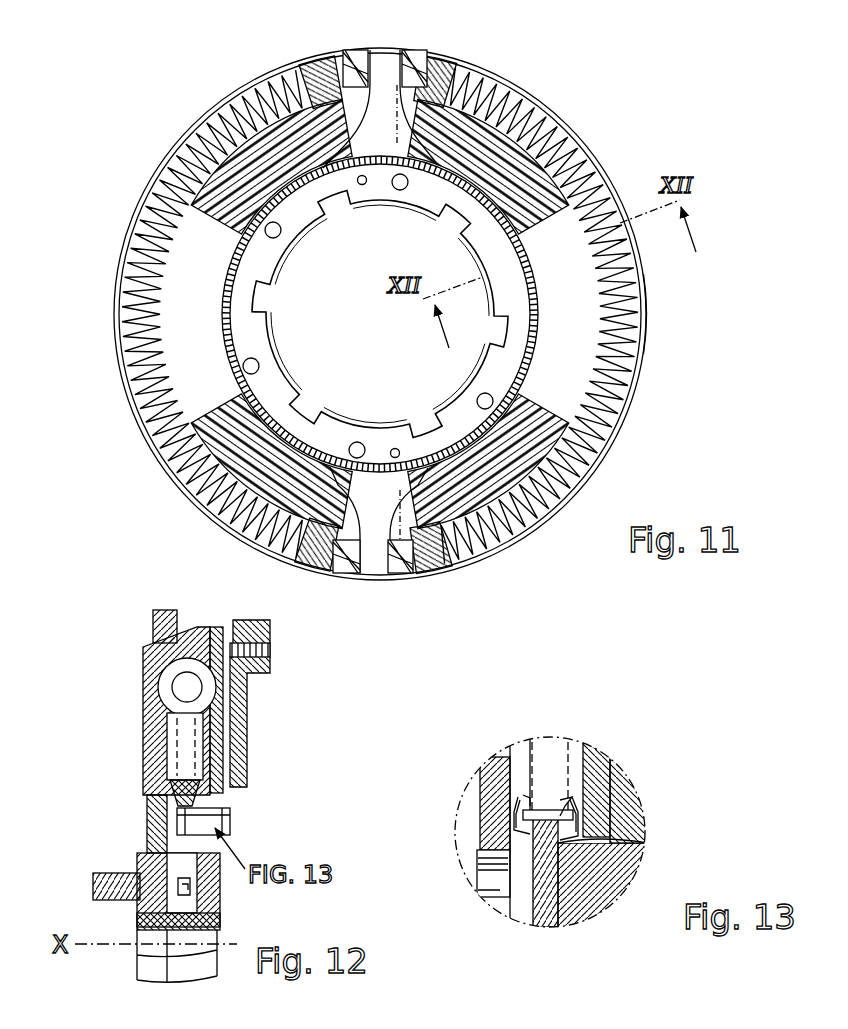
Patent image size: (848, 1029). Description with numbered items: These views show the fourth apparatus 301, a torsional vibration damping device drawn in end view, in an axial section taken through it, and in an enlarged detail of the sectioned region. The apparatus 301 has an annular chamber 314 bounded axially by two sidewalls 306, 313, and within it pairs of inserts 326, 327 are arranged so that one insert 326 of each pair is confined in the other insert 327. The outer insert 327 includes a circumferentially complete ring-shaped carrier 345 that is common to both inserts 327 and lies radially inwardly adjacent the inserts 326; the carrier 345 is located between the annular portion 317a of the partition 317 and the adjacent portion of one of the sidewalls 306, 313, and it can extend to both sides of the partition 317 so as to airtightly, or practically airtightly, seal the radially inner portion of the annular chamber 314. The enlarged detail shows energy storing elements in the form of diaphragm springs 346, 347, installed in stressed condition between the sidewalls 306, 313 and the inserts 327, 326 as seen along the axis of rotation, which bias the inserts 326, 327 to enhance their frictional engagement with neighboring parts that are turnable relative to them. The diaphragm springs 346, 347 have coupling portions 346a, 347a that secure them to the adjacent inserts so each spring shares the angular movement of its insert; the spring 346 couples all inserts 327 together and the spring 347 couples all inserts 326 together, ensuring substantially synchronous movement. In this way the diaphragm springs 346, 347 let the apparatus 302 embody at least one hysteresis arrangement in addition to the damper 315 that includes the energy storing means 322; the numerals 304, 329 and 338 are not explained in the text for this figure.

In FIG. 11, the apparatus 301 is at (505, 44).
In FIG. 12, the apparatus 301 is at (130, 613).
In FIG. 12, the apparatus 302 is at (136, 650).
In FIG. 12, the output part 304 is at (278, 659).
In FIG. 12, the sidewall 306 is at (160, 762).
In FIG. 13, the sidewall 306 is at (493, 764).
In FIG. 12, the sidewall 313 is at (217, 717).
In FIG. 13, the sidewall 313 is at (592, 764).
In FIG. 11, the annular chamber 314 is at (632, 269).
In FIG. 12, the annular chamber 314 is at (184, 700).
In FIG. 11, the damper 315 is at (652, 332).
In FIG. 12, the partition 317 is at (177, 839).
In FIG. 12, the annular portion 317a is at (160, 802).
In FIG. 11, the energy storing means 322 is at (634, 386).
In FIG. 11, the insert 326 is at (217, 108).
In FIG. 13, the insert 326 is at (600, 851).
In FIG. 11, the insert 327 is at (504, 176).
In FIG. 13, the insert 327 is at (520, 856).
In FIG. 11, the energy storing device 329 is at (517, 82).
In FIG. 11, the sleeve 338 is at (576, 214).
In FIG. 12, the sleeve 338 is at (182, 683).
In FIG. 11, the ring-shaped carrier 345 is at (373, 480).
In FIG. 13, the diaphragm spring 346 is at (520, 829).
In FIG. 13, the coupling portion 346a is at (520, 798).
In FIG. 13, the diaphragm spring 347 is at (582, 825).
In FIG. 13, the coupling portion 347a is at (586, 800).